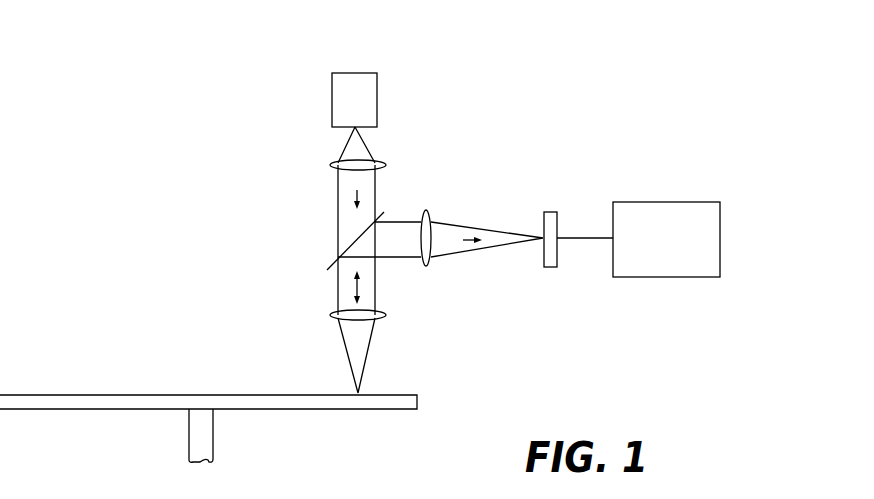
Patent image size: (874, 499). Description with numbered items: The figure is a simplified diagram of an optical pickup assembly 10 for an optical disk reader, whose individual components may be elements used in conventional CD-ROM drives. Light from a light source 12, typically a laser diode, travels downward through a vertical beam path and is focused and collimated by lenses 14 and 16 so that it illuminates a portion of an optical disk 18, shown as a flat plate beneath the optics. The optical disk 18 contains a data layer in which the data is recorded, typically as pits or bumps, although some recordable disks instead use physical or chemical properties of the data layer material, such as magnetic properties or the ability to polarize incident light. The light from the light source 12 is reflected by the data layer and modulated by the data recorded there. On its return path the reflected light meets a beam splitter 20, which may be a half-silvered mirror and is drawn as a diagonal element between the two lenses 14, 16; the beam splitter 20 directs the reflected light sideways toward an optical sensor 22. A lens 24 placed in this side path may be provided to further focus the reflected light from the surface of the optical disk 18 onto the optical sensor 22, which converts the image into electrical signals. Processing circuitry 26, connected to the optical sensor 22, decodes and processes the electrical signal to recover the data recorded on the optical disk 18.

The optical pickup assembly 10 is at (215, 81).
The light source 12 is at (371, 73).
The lens 14 is at (330, 165).
The lens 16 is at (330, 315).
The optical disk 18 is at (405, 394).
The beam splitter 20 is at (330, 258).
The optical sensor 22 is at (551, 212).
The lens 24 is at (428, 212).
The processing circuitry 26 is at (661, 202).